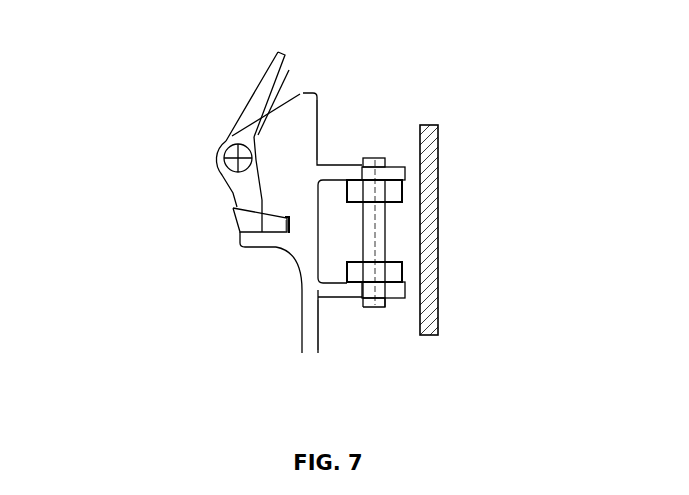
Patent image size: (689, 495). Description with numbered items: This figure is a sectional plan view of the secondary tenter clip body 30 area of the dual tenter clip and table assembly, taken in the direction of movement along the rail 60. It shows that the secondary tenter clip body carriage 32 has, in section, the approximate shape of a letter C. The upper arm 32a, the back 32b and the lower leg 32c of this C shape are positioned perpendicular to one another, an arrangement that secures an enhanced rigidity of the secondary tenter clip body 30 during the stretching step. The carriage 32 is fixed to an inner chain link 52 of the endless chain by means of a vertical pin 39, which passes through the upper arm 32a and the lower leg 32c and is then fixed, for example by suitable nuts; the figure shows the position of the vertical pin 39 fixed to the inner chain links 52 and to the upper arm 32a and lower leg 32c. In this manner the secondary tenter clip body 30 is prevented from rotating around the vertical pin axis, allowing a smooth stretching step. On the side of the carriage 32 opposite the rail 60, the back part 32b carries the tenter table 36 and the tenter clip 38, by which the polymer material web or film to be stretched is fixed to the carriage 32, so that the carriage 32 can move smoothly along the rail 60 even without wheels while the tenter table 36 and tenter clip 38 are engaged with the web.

The secondary tenter clip body carriage 32 is at (135, 92).
The tenter clip 38 is at (253, 93).
The secondary tenter clip body 30 is at (278, 128).
The upper arm 32a is at (313, 172).
The back 32b is at (287, 218).
The lower leg 32c is at (320, 290).
The tenter table 36 is at (240, 238).
The vertical pin 39 is at (368, 155).
The inner chain link 52 is at (375, 270).
The rail 60 is at (415, 225).